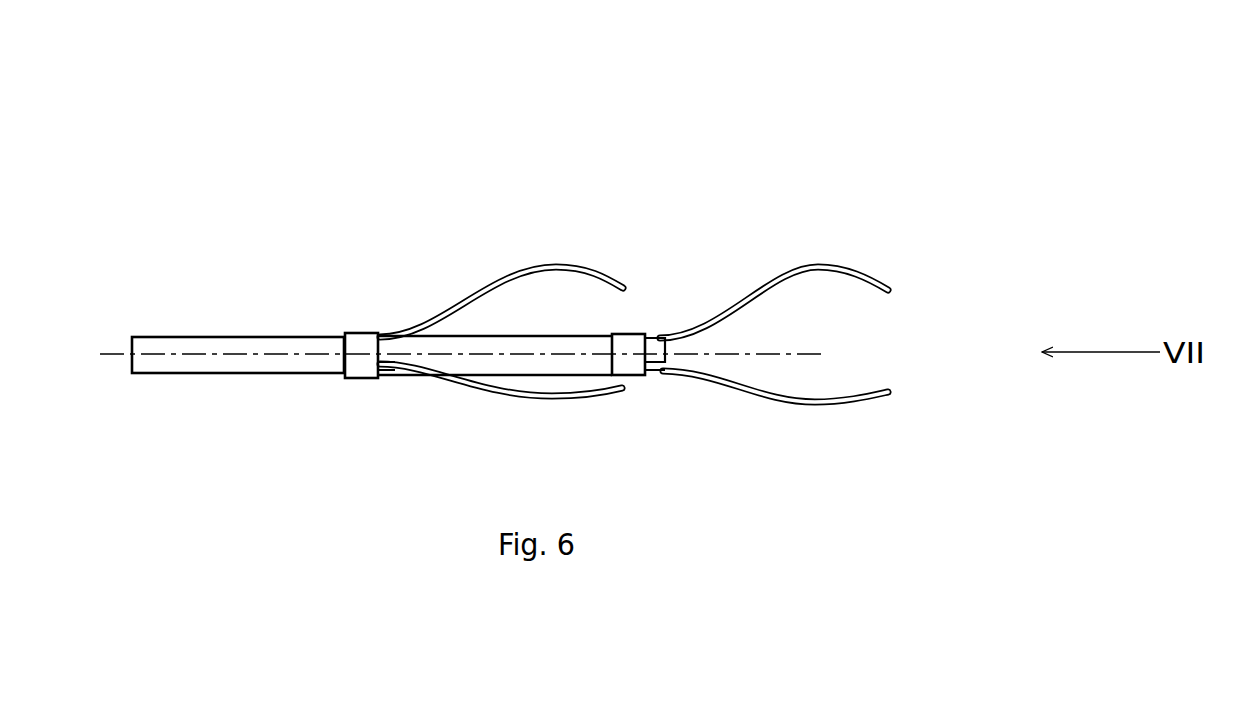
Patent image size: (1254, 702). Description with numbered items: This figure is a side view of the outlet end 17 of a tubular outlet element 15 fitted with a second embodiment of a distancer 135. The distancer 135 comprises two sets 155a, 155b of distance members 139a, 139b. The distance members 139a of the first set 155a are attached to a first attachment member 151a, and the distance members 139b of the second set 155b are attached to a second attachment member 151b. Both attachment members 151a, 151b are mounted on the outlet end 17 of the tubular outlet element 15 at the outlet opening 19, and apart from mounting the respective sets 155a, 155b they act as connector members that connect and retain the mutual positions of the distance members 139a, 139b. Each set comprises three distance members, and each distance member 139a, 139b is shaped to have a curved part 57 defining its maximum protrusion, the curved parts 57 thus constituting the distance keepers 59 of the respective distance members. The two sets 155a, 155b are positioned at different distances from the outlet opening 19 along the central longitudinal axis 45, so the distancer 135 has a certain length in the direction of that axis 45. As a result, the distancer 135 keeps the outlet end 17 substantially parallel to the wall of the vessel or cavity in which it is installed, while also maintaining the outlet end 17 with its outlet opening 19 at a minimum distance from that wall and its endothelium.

The tubular outlet element 15 is at (220, 348).
The outlet end 17 is at (508, 357).
The outlet opening 19 is at (665, 357).
The central longitudinal axis 45 is at (822, 357).
The curved part 57 is at (597, 270).
The distance keeper 59 is at (533, 267).
The distancer 135 is at (802, 183).
The distance member 139a is at (773, 278).
The distance member 139b is at (507, 277).
The first attachment member 151a is at (635, 370).
The second attachment member 151b is at (360, 368).
The first set of distance members 155a is at (800, 252).
The second set of distance members 155b is at (472, 283).